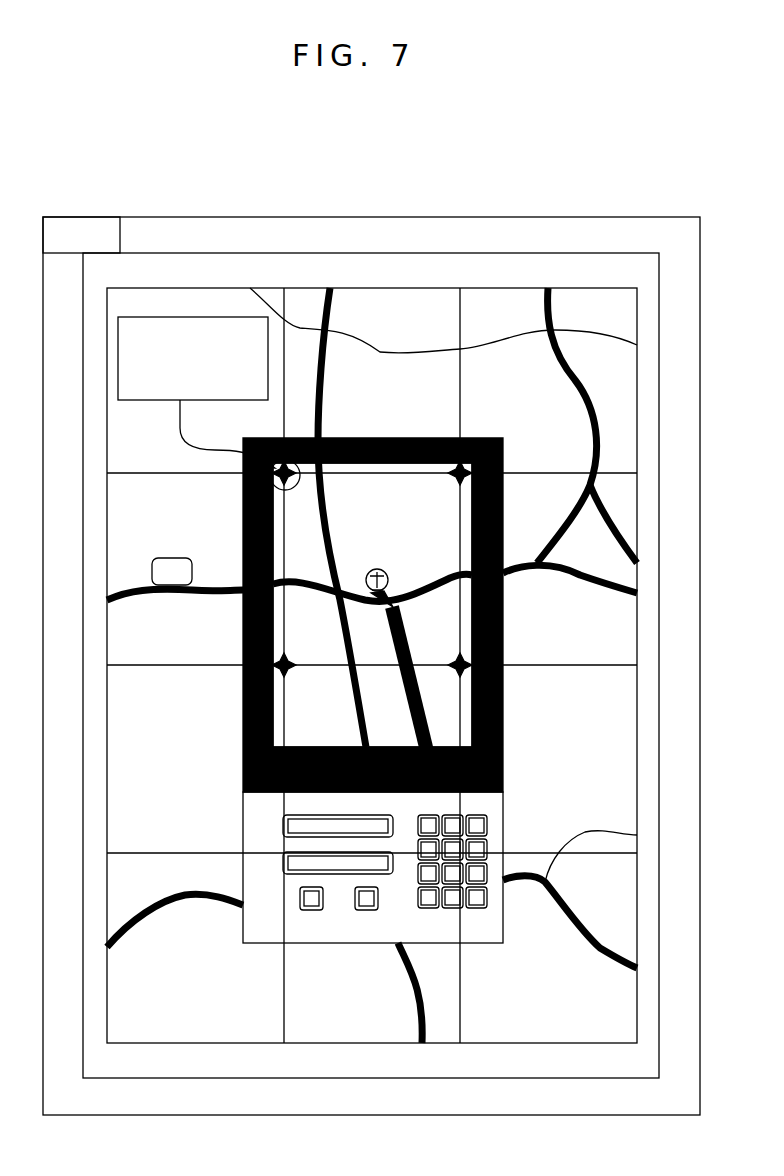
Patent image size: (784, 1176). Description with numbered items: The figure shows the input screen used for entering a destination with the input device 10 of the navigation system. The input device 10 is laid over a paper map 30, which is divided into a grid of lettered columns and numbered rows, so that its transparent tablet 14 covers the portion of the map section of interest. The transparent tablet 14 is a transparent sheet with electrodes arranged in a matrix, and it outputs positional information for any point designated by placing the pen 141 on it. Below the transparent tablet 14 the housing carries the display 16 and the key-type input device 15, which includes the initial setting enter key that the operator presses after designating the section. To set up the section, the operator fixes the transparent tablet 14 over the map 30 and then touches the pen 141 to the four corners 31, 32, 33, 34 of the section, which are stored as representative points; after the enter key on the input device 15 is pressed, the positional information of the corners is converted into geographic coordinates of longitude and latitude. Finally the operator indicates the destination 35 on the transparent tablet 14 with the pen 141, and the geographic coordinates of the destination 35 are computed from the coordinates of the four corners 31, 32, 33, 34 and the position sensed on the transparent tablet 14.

The map 30 is at (508, 217).
The input device 10 is at (508, 637).
The transparent tablet 14 is at (505, 600).
The pen 141 is at (440, 763).
The input device 15 is at (492, 908).
The display 16 is at (288, 882).
The corner 31 is at (243, 481).
The corner 32 is at (503, 478).
The corner 33 is at (243, 675).
The corner 34 is at (505, 683).
The destination 35 is at (389, 574).